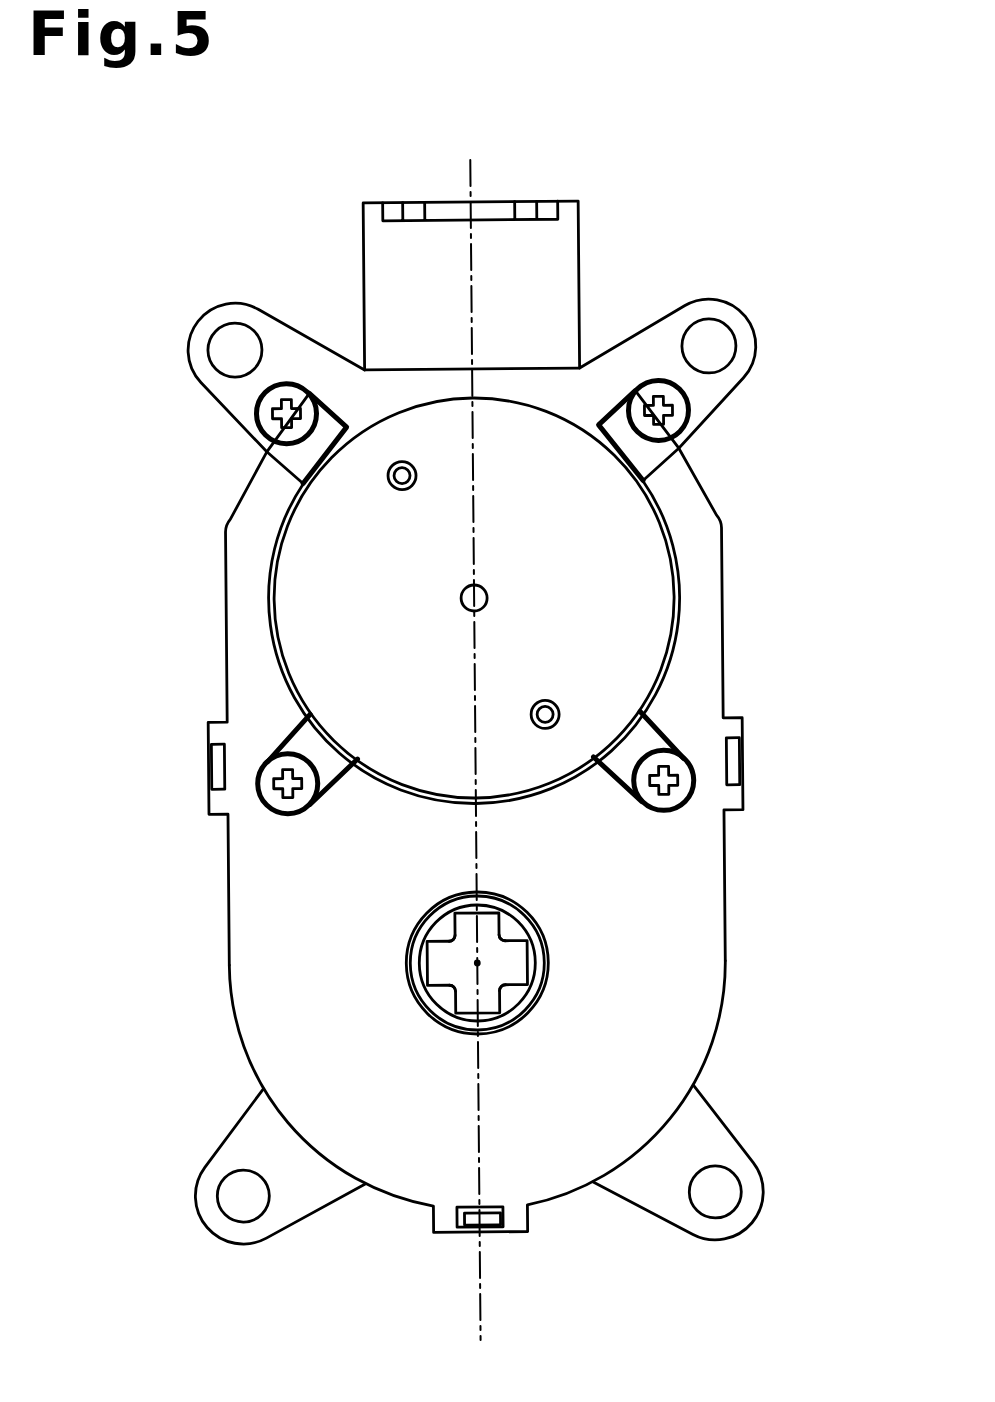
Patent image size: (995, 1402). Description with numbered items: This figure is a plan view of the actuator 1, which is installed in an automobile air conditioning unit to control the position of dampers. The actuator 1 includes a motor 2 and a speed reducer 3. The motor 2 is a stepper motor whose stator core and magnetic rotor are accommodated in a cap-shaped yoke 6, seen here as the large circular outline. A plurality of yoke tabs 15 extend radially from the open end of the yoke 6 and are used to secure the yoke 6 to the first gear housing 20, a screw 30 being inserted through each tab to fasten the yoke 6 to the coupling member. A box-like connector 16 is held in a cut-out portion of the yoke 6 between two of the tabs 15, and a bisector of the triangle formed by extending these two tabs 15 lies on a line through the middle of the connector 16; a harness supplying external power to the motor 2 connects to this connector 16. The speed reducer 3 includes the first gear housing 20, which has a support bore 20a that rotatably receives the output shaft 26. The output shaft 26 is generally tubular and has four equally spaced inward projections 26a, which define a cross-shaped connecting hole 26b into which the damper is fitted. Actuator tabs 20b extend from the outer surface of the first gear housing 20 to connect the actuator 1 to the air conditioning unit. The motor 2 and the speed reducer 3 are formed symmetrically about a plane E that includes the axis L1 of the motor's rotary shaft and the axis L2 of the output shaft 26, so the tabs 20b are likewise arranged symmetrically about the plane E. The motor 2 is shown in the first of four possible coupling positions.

The actuator 1 is at (784, 180).
The motor 2 is at (658, 569).
The speed reducer 3 is at (723, 985).
The yoke 6 is at (290, 567).
The yoke tabs 15 is at (267, 452).
The connector 16 is at (573, 233).
The first gear housing 20 is at (227, 934).
The support bore 20a is at (430, 925).
The actuator tabs 20b is at (306, 334).
The output shaft 26 is at (545, 1005).
The inward projections 26a is at (505, 928).
The connecting hole 26b is at (435, 967).
The screw 30 is at (259, 408).
The axis of the rotary shaft L1 is at (489, 597).
The axis of the output shaft L2 is at (480, 963).
The plane E is at (478, 1297).